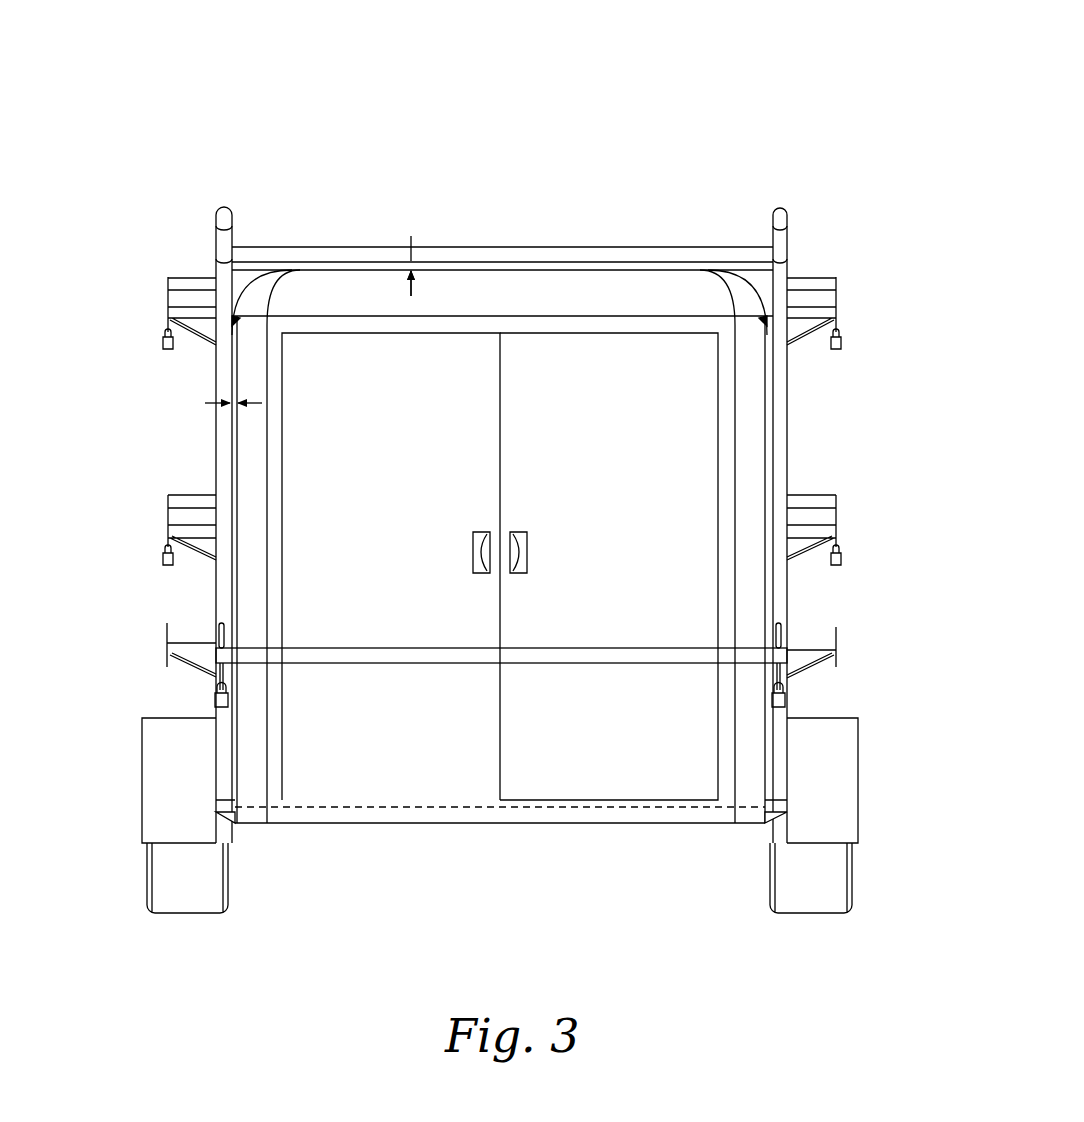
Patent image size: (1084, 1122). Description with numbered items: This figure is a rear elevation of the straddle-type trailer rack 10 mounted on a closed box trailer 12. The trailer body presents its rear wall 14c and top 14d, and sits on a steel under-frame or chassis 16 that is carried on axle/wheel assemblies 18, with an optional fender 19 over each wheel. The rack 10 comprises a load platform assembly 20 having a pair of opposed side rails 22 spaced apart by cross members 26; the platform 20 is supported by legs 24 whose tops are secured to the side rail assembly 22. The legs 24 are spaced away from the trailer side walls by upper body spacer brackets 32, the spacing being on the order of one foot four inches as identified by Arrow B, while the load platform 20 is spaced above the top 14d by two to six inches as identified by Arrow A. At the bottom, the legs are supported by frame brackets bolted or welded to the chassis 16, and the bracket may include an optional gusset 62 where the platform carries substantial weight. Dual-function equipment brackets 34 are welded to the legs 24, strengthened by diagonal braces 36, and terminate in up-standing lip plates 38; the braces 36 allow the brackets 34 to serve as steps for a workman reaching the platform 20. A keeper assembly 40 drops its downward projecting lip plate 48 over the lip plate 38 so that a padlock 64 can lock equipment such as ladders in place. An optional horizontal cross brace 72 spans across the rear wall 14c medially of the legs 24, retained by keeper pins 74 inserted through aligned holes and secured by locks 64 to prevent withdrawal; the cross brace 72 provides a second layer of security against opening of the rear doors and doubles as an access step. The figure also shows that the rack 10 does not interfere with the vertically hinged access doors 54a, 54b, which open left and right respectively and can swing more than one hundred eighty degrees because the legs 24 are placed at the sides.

The straddle-type trailer rack 10 is at (692, 62).
The box trailer 12 is at (586, 294).
The rear wall 14c is at (533, 308).
The top 14d is at (576, 270).
The chassis 16 is at (403, 815).
The axle/wheel assembly 18 is at (160, 890).
The fender 19 is at (160, 768).
The load platform assembly 20 is at (284, 230).
The side rail 22 is at (224, 207).
The leg 24 is at (787, 405).
The cross member 26 is at (528, 255).
The upper body spacer bracket 32 is at (240, 320).
The equipment bracket 34 is at (805, 652).
The brace 36 is at (806, 676).
The lip plate 38 is at (830, 650).
The keeper assembly 40 is at (800, 500).
The keeper lip plate 48 is at (836, 497).
The left access door 54a is at (404, 479).
The right access door 54b is at (617, 479).
The gusset 62 is at (780, 815).
The lock 64 is at (841, 560).
The horizontal cross brace 72 is at (525, 655).
The keeper pin 74 is at (226, 630).
The Arrow A is at (412, 239).
The Arrow B is at (197, 405).